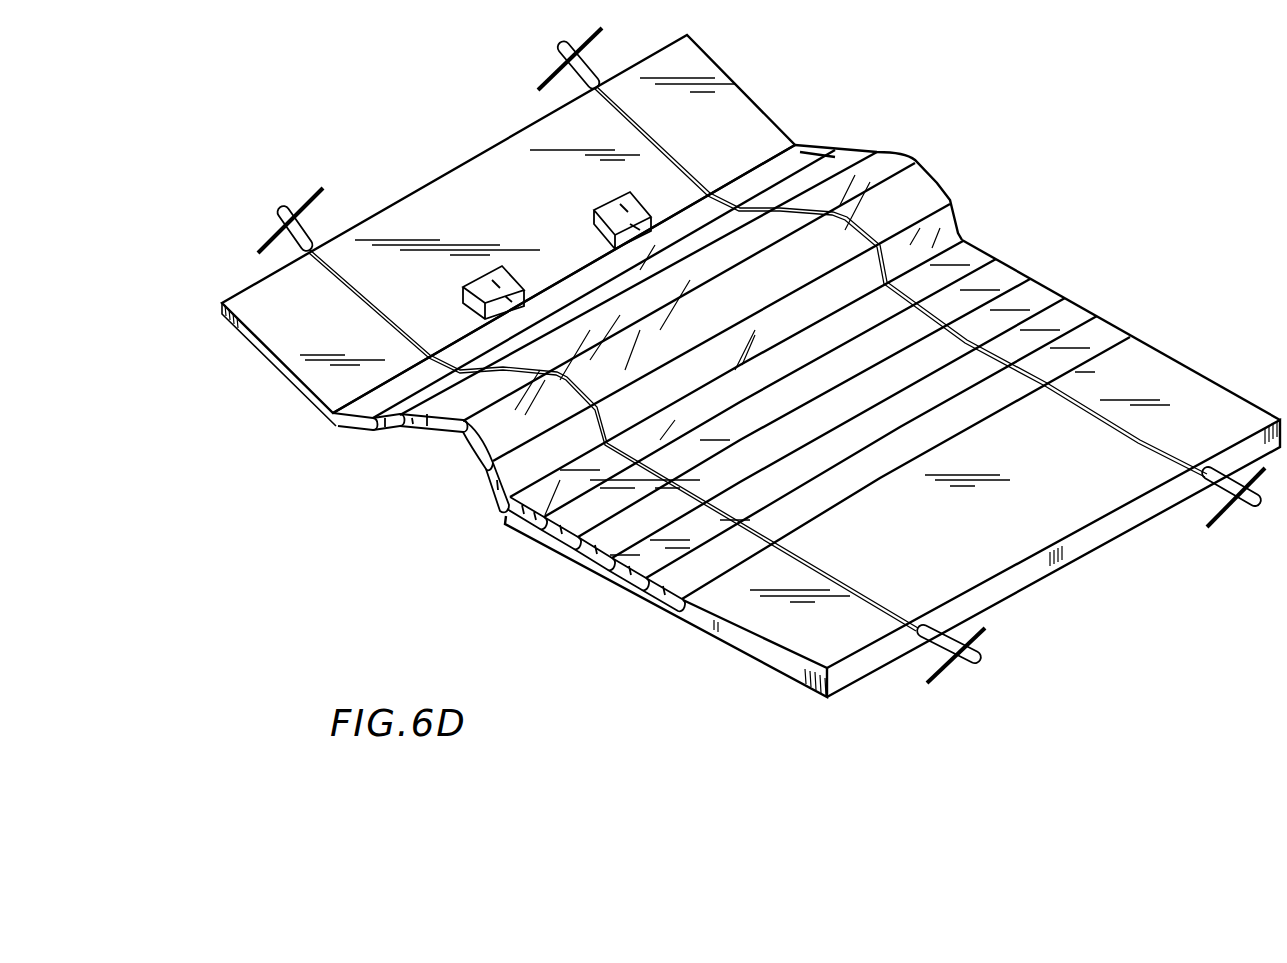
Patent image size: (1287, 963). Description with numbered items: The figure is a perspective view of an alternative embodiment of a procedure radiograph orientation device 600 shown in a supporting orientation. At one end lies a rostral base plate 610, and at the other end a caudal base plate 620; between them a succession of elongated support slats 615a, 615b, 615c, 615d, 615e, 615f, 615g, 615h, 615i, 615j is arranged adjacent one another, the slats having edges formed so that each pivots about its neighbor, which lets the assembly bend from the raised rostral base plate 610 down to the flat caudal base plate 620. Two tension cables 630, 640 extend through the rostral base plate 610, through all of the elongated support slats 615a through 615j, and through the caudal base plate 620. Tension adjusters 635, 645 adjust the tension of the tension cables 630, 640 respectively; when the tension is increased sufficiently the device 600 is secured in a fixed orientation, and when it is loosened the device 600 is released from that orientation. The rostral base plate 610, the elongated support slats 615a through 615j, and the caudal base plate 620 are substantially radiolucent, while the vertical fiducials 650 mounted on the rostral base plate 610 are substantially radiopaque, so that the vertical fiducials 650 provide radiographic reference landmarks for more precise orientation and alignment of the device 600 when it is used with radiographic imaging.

The procedure radiograph orientation device 600 is at (1050, 186).
The rostral base plate 610 is at (468, 158).
The elongated support slat 615a is at (337, 423).
The elongated support slat 615b is at (388, 440).
The elongated support slat 615c is at (440, 432).
The elongated support slat 615d is at (467, 443).
The elongated support slat 615e is at (493, 487).
The elongated support slat 615f is at (513, 520).
The elongated support slat 615g is at (553, 537).
The elongated support slat 615h is at (595, 560).
The elongated support slat 615i is at (633, 582).
The elongated support slat 615j is at (660, 607).
The caudal base plate 620 is at (1083, 542).
The tension cable 630 is at (813, 563).
The tension adjuster 635 is at (980, 663).
The tension cable 640 is at (1137, 437).
The tension adjuster 645 is at (1258, 507).
The vertical fiducial 650 is at (597, 213).